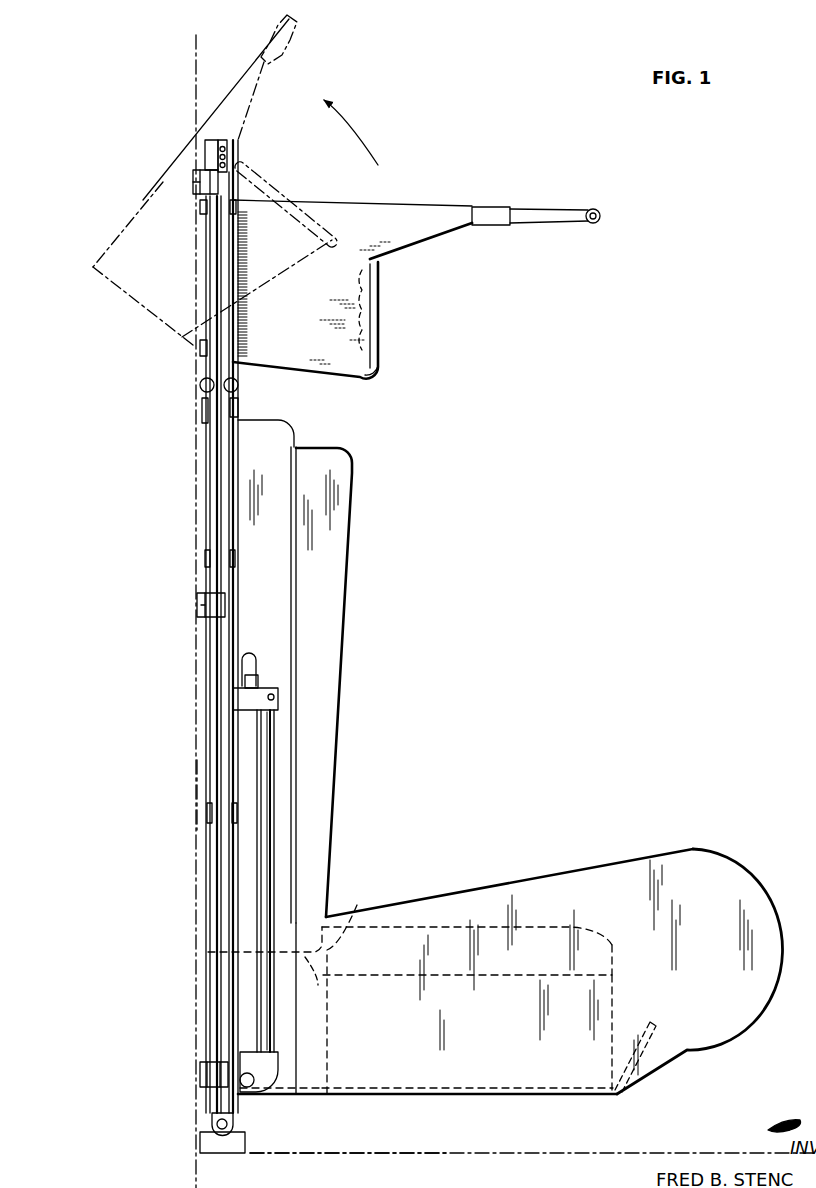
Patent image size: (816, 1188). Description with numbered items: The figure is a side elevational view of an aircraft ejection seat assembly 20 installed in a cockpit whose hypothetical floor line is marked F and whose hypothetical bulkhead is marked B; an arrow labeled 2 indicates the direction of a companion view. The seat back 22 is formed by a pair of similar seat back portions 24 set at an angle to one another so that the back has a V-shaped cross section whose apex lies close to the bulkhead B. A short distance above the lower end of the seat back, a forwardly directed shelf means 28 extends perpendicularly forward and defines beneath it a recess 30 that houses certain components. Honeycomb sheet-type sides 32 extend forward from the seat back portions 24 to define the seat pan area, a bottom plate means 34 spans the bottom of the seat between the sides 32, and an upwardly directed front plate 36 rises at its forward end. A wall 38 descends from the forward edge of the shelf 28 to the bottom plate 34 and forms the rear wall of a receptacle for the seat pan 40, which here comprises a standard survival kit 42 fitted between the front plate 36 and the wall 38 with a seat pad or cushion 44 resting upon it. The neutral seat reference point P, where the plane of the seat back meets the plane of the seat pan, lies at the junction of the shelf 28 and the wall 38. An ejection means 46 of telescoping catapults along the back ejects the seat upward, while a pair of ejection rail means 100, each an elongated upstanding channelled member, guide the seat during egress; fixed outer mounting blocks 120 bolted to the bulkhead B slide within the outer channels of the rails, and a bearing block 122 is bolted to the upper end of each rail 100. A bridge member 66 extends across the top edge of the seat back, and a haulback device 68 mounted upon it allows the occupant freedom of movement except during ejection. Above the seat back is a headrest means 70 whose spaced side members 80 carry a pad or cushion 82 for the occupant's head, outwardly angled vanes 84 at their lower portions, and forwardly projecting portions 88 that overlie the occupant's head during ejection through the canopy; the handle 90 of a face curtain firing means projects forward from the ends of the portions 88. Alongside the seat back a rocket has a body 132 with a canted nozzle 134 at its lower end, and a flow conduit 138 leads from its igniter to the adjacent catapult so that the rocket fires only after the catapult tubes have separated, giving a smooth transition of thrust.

The section line of FIG. 2 is at (226, 62).
The ejection seat assembly 20 is at (440, 770).
The seat back 22 is at (312, 610).
The seat back portions 24 is at (335, 523).
The shelf means 28 is at (314, 975).
The recess 30 is at (303, 1063).
The sides 32 is at (748, 1002).
The bottom plate means 34 is at (460, 1088).
The front plate 36 is at (635, 1058).
The wall 38 is at (332, 1063).
The seat pan 40 is at (557, 913).
The survival kit 42 is at (600, 1032).
The seat pad or cushion 44 is at (592, 952).
The ejection means 46 is at (214, 1141).
The bridge member 66 is at (240, 408).
The haulback device 68 is at (204, 385).
The headrest means 70 is at (140, 203).
The side members 80 is at (312, 372).
The pad or cushion 82 is at (372, 320).
The vanes 84 is at (378, 350).
The forwardly projecting portion 88 is at (430, 226).
The handle 90 is at (590, 224).
The ejection rail means 100 is at (214, 1018).
The outer mounting blocks 120 is at (208, 182).
The bearing block 122 is at (228, 160).
The rocket body 132 is at (258, 862).
The nozzle 134 is at (256, 1083).
The flow conduit 138 is at (248, 650).
The bulkhead B is at (196, 792).
The neutral seat reference point P is at (357, 905).
The floor line F is at (428, 1148).